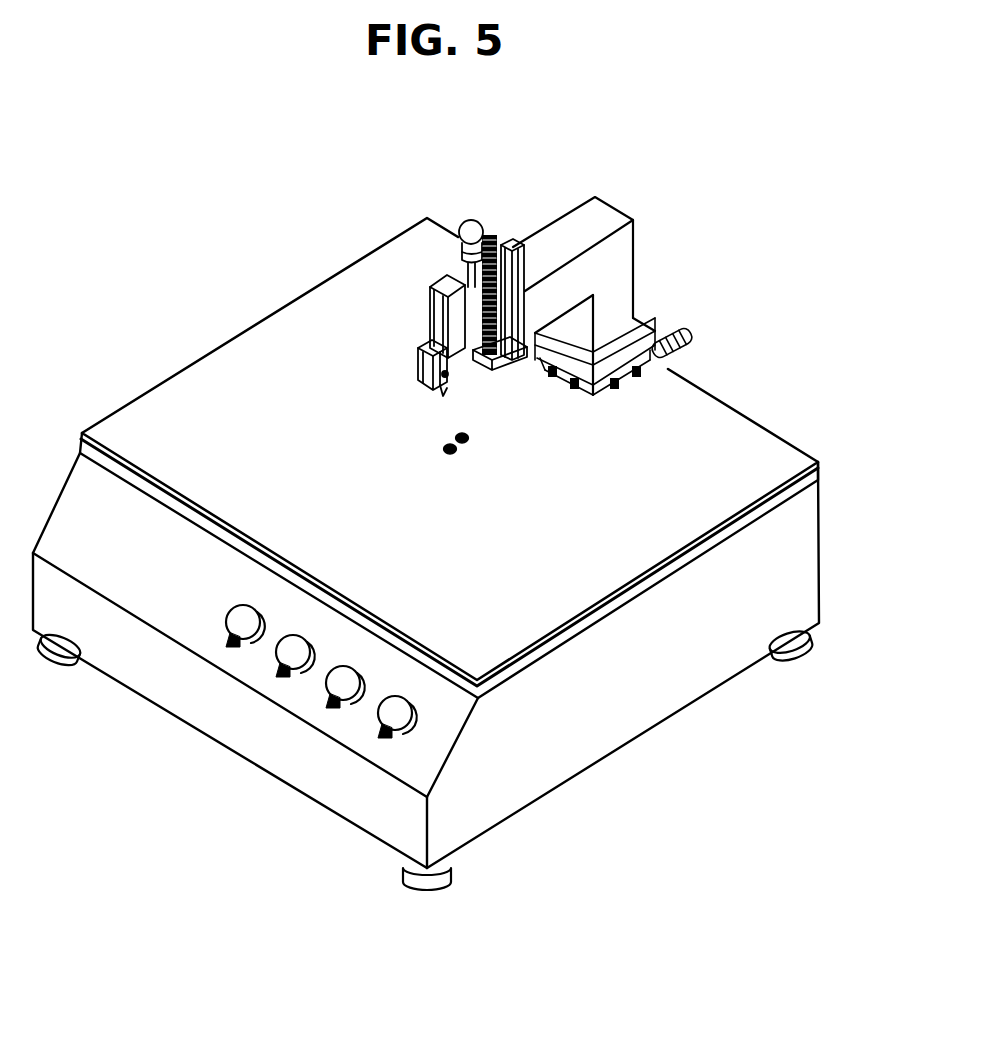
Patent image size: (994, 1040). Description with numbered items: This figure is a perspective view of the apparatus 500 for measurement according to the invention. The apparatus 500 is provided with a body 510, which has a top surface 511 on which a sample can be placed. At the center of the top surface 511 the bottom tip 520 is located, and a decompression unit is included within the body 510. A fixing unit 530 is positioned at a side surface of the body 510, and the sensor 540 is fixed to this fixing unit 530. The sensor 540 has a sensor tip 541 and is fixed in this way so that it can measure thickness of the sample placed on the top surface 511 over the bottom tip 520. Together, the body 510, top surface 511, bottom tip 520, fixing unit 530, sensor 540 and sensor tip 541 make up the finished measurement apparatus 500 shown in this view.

The apparatus for measurement 500 is at (338, 195).
The body 510 is at (632, 712).
The top surface 511 is at (555, 478).
The bottom tip 520 is at (466, 455).
The fixing unit 530 is at (610, 277).
The sensor 540 is at (437, 327).
The sensor tip 541 is at (440, 400).